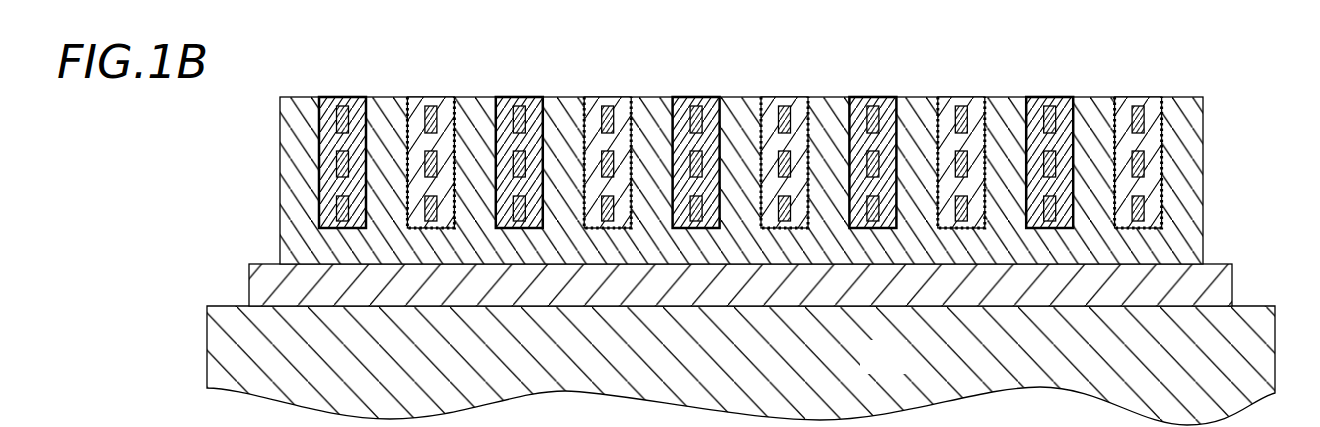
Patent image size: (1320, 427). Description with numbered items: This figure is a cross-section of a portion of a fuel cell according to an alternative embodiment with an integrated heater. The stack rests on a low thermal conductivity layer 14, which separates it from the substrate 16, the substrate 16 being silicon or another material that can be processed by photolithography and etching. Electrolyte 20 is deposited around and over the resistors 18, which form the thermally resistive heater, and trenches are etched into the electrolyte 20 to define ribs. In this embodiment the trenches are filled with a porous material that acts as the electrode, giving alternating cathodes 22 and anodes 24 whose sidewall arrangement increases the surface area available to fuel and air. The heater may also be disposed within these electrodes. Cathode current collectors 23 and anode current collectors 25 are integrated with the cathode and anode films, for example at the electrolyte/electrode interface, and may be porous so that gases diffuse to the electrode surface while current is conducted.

The low thermal conductivity layer 14 is at (1220, 290).
The substrate 16 is at (903, 366).
The resistors 18 is at (327, 97).
The electrolyte 20 is at (280, 248).
The cathodes 22 is at (352, 98).
The cathode current collectors 23 is at (318, 103).
The anodes 24 is at (433, 98).
The anode current collectors 25 is at (420, 136).